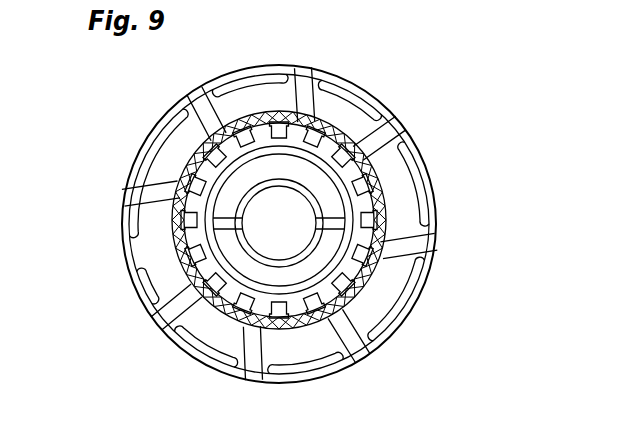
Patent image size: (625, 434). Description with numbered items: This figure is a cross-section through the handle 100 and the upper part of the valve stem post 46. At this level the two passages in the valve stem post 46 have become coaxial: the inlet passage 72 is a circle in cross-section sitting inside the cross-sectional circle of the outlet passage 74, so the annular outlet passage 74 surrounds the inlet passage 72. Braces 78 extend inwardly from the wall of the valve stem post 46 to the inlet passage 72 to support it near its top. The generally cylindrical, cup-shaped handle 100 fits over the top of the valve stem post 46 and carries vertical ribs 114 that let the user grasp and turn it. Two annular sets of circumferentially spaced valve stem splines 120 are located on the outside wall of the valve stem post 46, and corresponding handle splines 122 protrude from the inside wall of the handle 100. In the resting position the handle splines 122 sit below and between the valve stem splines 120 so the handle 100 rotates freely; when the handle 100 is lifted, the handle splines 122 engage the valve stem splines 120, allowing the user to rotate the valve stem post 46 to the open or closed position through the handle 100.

The handle 100 is at (137, 146).
The valve stem post 46 is at (238, 288).
The vertical ribs 114 is at (299, 92).
The handle splines 122 is at (406, 122).
The valve stem splines 120 is at (276, 138).
The outlet passage 74 is at (279, 220).
The inlet passage 72 is at (279, 223).
The braces 78 is at (220, 228).